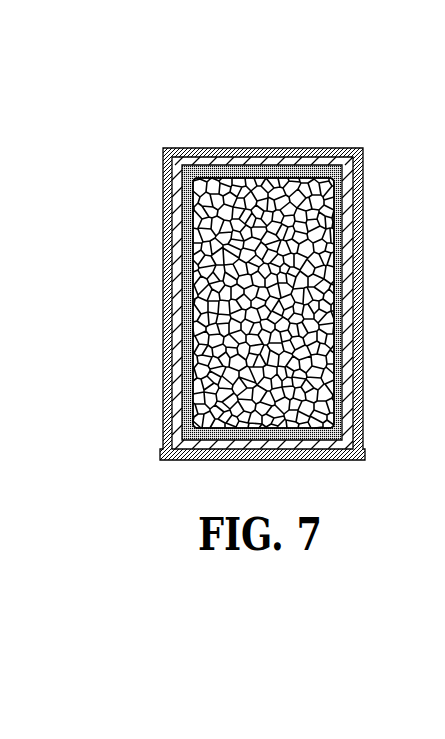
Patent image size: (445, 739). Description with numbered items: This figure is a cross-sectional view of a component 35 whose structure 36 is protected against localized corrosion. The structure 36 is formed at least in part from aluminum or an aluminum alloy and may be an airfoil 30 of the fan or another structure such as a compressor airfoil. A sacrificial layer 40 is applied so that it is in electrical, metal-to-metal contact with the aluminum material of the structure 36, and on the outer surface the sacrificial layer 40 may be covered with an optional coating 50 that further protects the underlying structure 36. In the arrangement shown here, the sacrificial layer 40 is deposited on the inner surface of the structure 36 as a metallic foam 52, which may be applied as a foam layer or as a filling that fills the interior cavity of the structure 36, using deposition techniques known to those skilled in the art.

The component 35 is at (243, 104).
The airfoil 30 is at (273, 168).
The structure 36 is at (325, 170).
The sacrificial layer 40 is at (176, 245).
The coating 50 is at (170, 326).
The metallic foam 52 is at (325, 300).